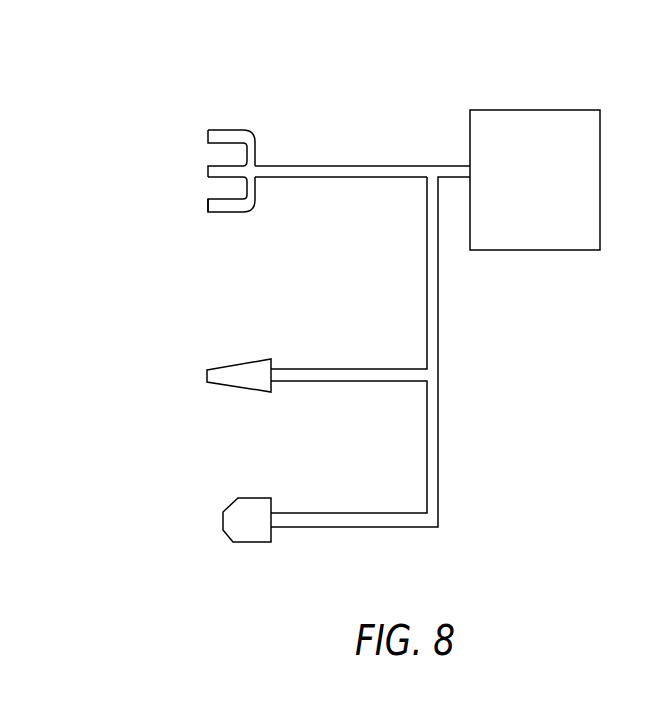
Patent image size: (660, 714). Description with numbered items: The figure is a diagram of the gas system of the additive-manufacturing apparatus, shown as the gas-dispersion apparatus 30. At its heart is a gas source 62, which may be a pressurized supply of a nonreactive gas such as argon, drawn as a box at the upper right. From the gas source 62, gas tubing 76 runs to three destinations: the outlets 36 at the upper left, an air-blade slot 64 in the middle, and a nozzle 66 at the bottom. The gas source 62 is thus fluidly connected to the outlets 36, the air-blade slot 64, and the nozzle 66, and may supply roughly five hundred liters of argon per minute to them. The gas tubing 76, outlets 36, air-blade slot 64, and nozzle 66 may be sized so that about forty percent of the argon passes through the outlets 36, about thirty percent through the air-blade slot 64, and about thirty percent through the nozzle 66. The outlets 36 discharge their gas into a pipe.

The gas-dispersion apparatus 30 is at (300, 72).
The outlets 36 is at (205, 205).
The gas source 62 is at (580, 110).
The air-blade slot 64 is at (226, 366).
The nozzle 66 is at (242, 498).
The gas tubing 76 is at (438, 322).